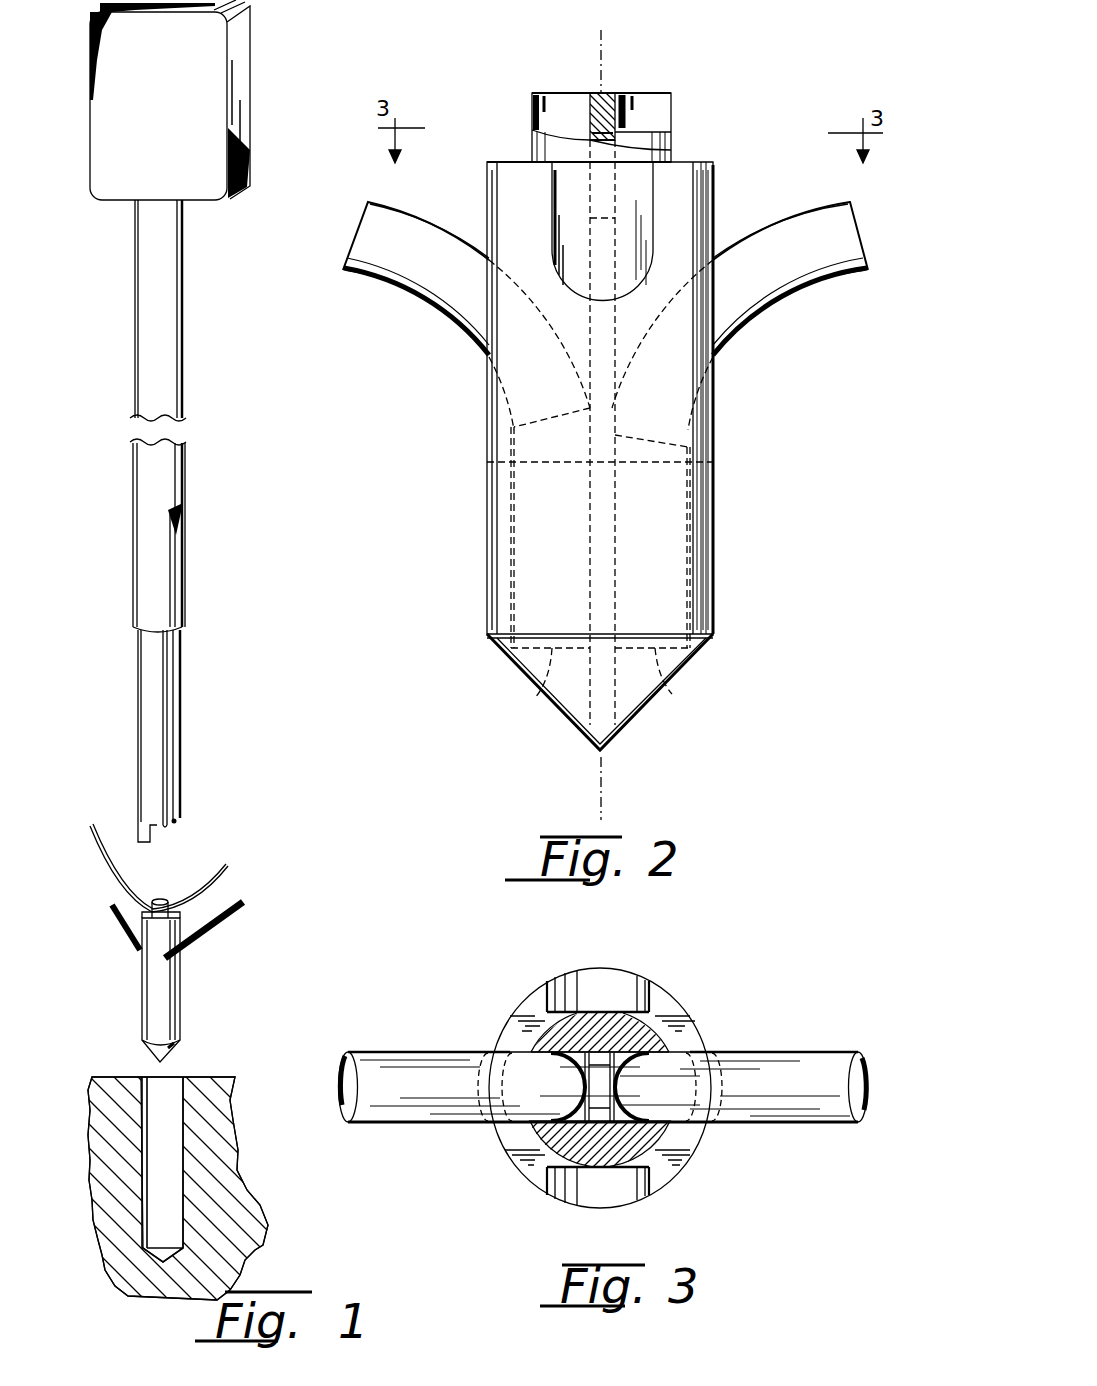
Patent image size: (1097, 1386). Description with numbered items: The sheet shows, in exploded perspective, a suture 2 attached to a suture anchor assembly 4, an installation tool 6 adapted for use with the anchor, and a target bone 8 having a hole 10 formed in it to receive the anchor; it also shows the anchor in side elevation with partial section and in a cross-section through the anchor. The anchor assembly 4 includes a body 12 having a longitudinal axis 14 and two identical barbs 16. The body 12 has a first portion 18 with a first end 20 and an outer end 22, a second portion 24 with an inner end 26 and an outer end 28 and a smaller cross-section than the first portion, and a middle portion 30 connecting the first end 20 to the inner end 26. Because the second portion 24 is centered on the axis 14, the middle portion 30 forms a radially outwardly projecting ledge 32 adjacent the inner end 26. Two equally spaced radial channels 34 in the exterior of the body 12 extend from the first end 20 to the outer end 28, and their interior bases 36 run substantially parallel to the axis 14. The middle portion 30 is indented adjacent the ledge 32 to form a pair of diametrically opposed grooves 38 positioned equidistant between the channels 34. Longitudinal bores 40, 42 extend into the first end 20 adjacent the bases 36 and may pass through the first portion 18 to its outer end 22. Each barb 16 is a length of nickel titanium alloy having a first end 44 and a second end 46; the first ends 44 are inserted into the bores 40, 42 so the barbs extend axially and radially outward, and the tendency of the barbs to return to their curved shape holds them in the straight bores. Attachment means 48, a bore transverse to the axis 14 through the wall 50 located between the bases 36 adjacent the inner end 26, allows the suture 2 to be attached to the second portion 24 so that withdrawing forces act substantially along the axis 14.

In FIG. 1, the suture 2 is at (226, 880).
In FIG. 1, the suture anchor assembly 4 is at (183, 1005).
In FIG. 2, the suture anchor assembly 4 is at (601, 404).
In FIG. 3, the suture anchor assembly 4 is at (603, 1082).
In FIG. 1, the installation tool 6 is at (183, 355).
In FIG. 1, the target bone 8 is at (90, 1130).
In FIG. 1, the hole 10 is at (165, 1090).
In FIG. 2, the body 12 is at (487, 512).
In FIG. 2, the longitudinal axis 14 is at (604, 790).
In FIG. 2, the barbs 16 is at (375, 272).
In FIG. 3, the barbs 16 is at (410, 1062).
In FIG. 2, the first portion 18 is at (713, 550).
In FIG. 2, the first end 20 is at (700, 465).
In FIG. 2, the outer end 22 is at (700, 650).
In FIG. 2, the second portion 24 is at (672, 112).
In FIG. 2, the inner end 26 is at (680, 160).
In FIG. 2, the outer end 28 is at (660, 95).
In FIG. 2, the middle portion 30 is at (713, 372).
In FIG. 2, the ledge 32 is at (503, 160).
In FIG. 2, the radial channels 34 is at (500, 390).
In FIG. 3, the radial channels 34 is at (697, 1047).
In FIG. 2, the interior bases 36 is at (497, 432).
In FIG. 2, the grooves 38 is at (563, 193).
In FIG. 3, the grooves 38 is at (588, 985).
In FIG. 2, the bore 40 is at (690, 596).
In FIG. 2, the bore 42 is at (510, 582).
In FIG. 2, the first end 44 is at (540, 693).
In FIG. 2, the second end 46 is at (362, 218).
In FIG. 2, the attachment means 48 is at (615, 132).
In FIG. 2, the wall 50 is at (605, 92).
In FIG. 3, the wall 50 is at (598, 1068).